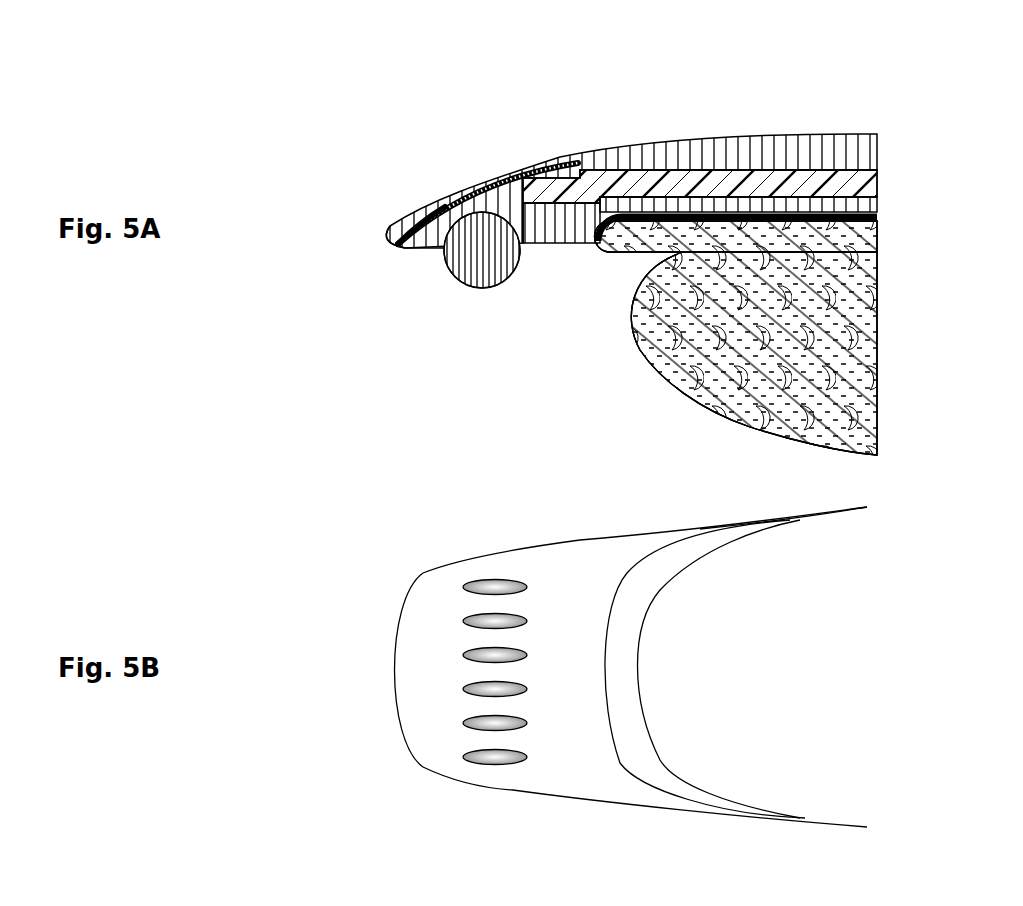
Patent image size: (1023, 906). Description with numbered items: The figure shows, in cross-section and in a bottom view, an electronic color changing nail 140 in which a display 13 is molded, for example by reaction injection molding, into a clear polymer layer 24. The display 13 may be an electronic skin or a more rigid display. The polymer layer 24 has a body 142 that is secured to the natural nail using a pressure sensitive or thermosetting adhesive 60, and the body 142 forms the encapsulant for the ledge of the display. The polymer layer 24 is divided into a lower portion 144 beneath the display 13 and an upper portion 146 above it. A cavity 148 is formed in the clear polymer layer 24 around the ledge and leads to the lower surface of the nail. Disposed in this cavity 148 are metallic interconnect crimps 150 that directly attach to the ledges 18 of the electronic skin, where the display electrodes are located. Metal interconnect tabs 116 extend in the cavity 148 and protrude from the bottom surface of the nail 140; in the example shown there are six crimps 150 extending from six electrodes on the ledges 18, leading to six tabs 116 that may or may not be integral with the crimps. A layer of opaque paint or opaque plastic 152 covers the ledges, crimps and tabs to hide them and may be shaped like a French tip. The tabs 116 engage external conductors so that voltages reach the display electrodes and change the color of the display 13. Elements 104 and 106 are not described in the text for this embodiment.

In FIG. 5A, the electronic color changing nail 140 is at (488, 50).
In FIG. 5A, the upper portion 146 is at (677, 152).
In FIG. 5A, the lower portion 144 is at (710, 200).
In FIG. 5A, the body 142 is at (858, 152).
In FIG. 5A, the display 13 is at (650, 187).
In FIG. 5A, the ledges 18 is at (546, 198).
In FIG. 5A, the metallic interconnect crimps 150 is at (513, 200).
In FIG. 5A, the opaque paint or opaque plastic 152 is at (433, 217).
In FIG. 5A, the cavity 148 is at (442, 240).
In FIG. 5A, the clear polymer layer 24 is at (397, 240).
In FIG. 5B, the clear polymer layer 24 is at (407, 663).
In FIG. 5A, the metal interconnect tabs 116 is at (483, 253).
In FIG. 5B, the metal interconnect tabs 116 is at (480, 583).
In FIG. 5A, the adhesive 60 is at (620, 470).
In FIG. 5B, the adhesive 60 is at (620, 572).
In FIG. 5A, the pad layer 104 is at (698, 236).
In FIG. 5B, the pad layer 104 is at (698, 550).
In FIG. 5A, the foam cushion 106 is at (831, 337).
In FIG. 5B, the foam cushion 106 is at (831, 610).